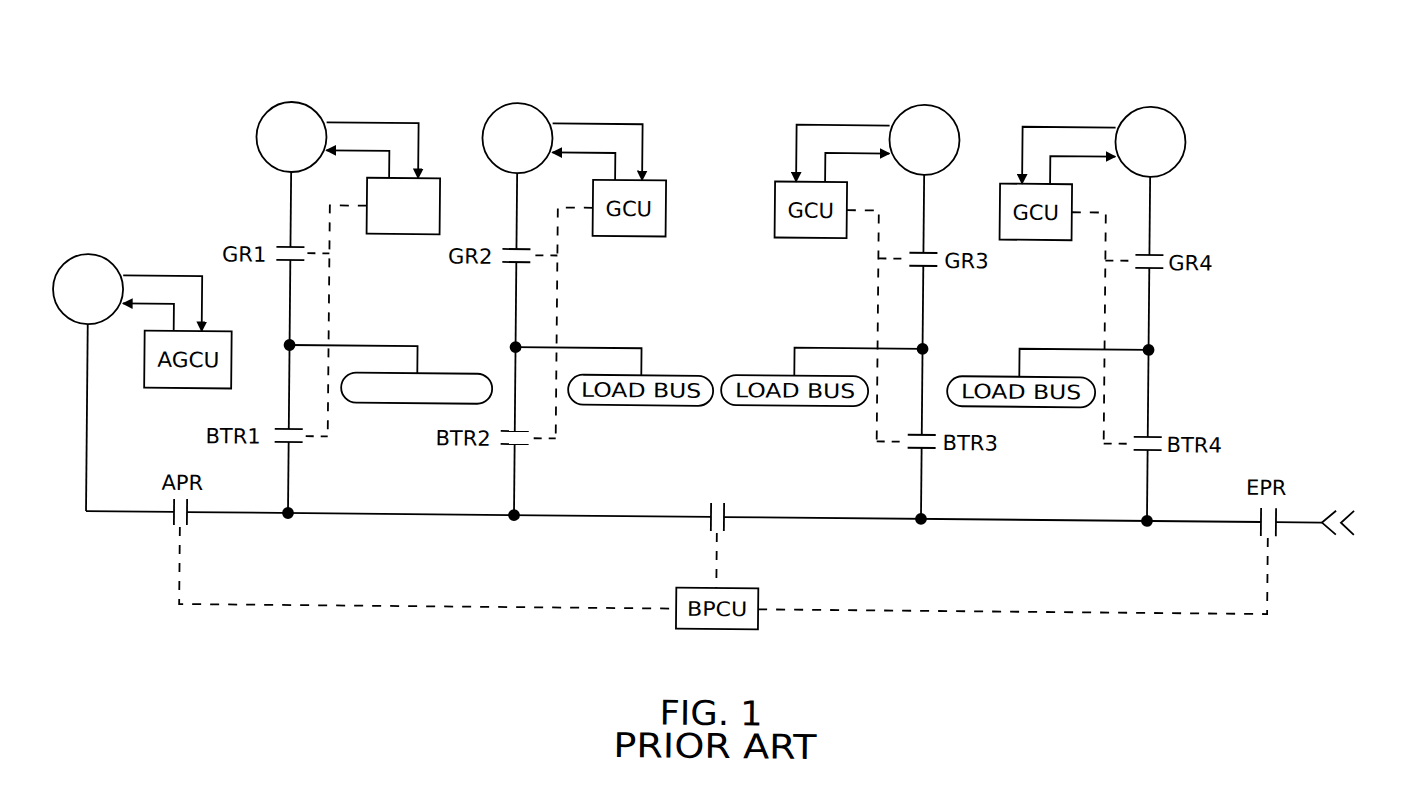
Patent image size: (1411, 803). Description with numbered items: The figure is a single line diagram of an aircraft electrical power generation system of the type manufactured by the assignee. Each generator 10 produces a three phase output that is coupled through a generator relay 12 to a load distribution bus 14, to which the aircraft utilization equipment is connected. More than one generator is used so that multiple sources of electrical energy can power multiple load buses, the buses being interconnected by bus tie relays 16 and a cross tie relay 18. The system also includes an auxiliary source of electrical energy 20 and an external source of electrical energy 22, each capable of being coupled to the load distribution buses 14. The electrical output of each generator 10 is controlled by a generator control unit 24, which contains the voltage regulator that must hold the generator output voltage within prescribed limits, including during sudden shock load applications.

The generator 10 is at (288, 102).
The generator relay 12 is at (279, 247).
The load distribution bus 14 is at (452, 372).
The bus tie relay 16 is at (291, 443).
The cross tie relay 18 is at (708, 509).
The auxiliary source of electrical energy 20 is at (76, 256).
The external source of electrical energy 22 is at (1376, 480).
The generator control unit 24 is at (425, 177).